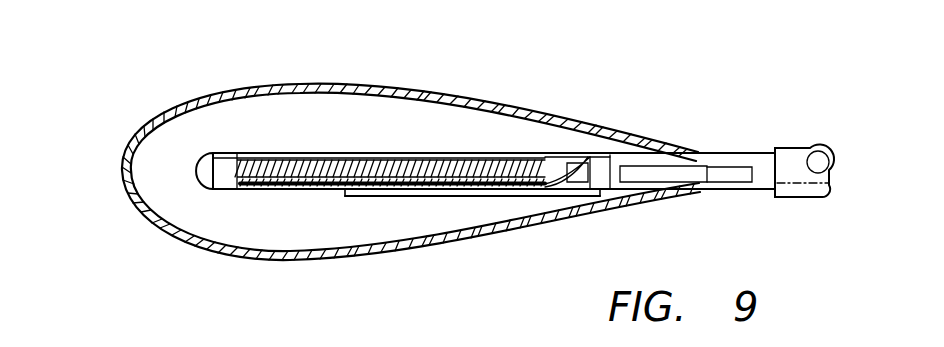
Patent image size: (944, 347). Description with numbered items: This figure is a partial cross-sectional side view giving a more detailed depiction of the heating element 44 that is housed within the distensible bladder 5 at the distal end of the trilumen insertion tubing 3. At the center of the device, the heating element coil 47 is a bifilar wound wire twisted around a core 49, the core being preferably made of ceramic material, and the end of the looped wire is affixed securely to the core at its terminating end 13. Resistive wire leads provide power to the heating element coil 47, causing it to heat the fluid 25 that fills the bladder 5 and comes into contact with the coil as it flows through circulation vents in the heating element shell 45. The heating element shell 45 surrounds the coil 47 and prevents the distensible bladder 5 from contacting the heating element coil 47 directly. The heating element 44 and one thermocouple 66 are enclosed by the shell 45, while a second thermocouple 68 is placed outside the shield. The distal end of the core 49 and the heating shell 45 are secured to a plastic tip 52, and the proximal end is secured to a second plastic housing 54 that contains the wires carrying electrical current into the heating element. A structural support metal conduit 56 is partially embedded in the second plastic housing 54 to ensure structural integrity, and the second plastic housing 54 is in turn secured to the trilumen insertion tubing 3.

The trilumen insertion tubing 3 is at (788, 150).
The distensible bladder 5 is at (170, 240).
The terminating end 13 is at (197, 182).
The fluid 25 is at (353, 238).
The heating element 44 is at (238, 190).
The heating element shell 45 is at (238, 150).
The heating element coil 47 is at (380, 153).
The core 49 is at (287, 192).
The plastic tip 52 is at (196, 163).
The second plastic housing 54 is at (643, 152).
The structural support metal conduit 56 is at (753, 175).
The thermocouple 66 is at (404, 193).
The second thermocouple 68 is at (449, 195).